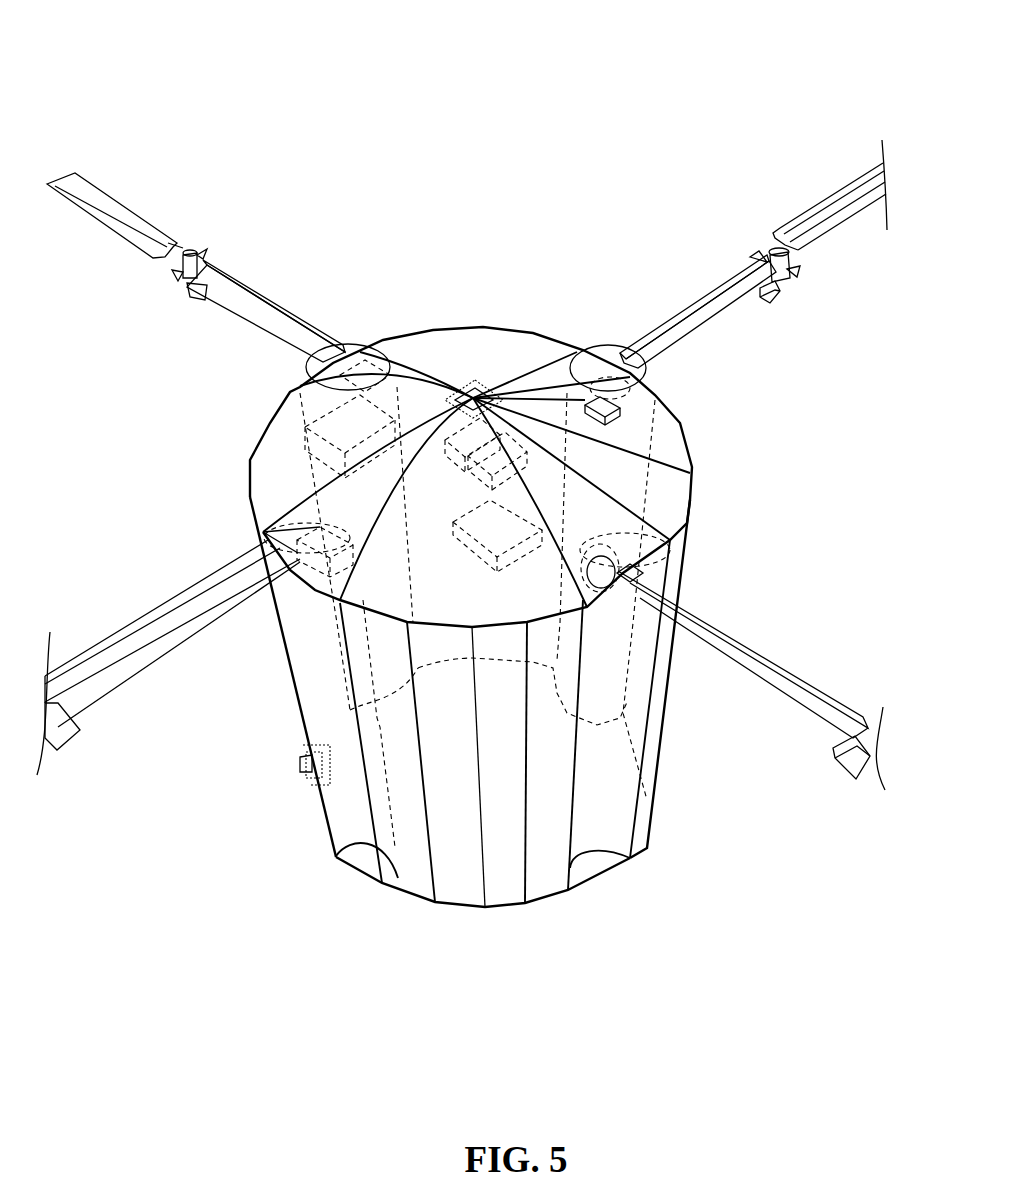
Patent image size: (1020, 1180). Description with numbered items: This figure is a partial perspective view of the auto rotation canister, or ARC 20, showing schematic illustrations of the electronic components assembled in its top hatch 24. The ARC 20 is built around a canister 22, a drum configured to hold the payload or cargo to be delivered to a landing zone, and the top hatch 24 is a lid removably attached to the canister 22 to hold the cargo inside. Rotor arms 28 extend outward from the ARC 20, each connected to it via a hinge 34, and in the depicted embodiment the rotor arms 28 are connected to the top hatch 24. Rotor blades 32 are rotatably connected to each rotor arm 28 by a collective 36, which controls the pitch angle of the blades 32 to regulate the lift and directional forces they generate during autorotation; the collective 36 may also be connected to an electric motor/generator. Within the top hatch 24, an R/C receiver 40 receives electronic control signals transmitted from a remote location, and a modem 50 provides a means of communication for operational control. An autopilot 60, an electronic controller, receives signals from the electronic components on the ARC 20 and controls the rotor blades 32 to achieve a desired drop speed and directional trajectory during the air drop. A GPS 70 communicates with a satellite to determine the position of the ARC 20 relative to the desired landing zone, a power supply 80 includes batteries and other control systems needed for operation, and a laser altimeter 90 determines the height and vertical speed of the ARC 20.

The auto rotation canister (ARC) 20 is at (606, 111).
The canister 22 is at (463, 882).
The top hatch 24 is at (502, 350).
The rotor arm 28 is at (245, 312).
The rotor blade 32 is at (135, 232).
The hinge 34 is at (357, 362).
The collective 36 is at (187, 290).
The R/C receiver 40 is at (600, 400).
The modem 50 is at (500, 527).
The autopilot 60 is at (487, 447).
The GPS 70 is at (470, 385).
The power supply 80 is at (338, 425).
The laser altimeter 90 is at (310, 762).